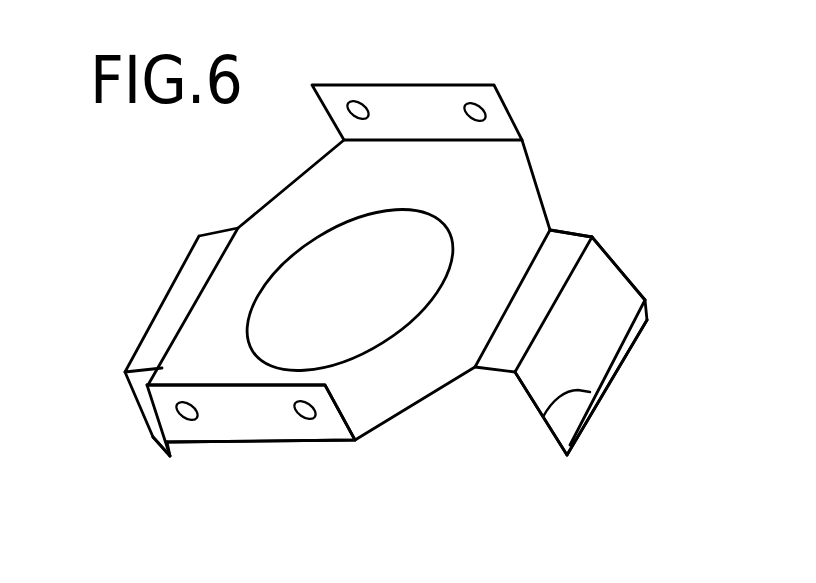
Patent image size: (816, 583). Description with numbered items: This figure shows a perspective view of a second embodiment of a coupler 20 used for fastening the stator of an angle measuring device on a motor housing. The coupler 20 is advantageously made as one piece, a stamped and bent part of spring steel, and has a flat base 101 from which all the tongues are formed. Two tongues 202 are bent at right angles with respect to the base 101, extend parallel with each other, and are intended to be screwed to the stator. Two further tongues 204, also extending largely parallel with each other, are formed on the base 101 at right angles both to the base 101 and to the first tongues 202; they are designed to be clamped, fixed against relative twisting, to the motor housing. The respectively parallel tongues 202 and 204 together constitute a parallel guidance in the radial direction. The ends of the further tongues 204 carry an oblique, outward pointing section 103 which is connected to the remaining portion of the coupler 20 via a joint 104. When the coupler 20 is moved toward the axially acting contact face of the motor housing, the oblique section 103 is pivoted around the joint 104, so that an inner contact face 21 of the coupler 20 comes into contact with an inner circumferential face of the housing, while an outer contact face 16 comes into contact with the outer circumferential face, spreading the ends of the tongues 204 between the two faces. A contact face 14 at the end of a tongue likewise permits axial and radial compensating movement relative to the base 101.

The coupler 20 is at (557, 180).
The base 101 is at (297, 205).
The tongues 202 is at (427, 115).
The contact face 14 is at (163, 462).
The further tongues 204 is at (576, 229).
The joint 104 is at (640, 307).
The oblique section 103 is at (646, 322).
The outer contact face 16 is at (545, 413).
The inner contact face 21 is at (567, 457).